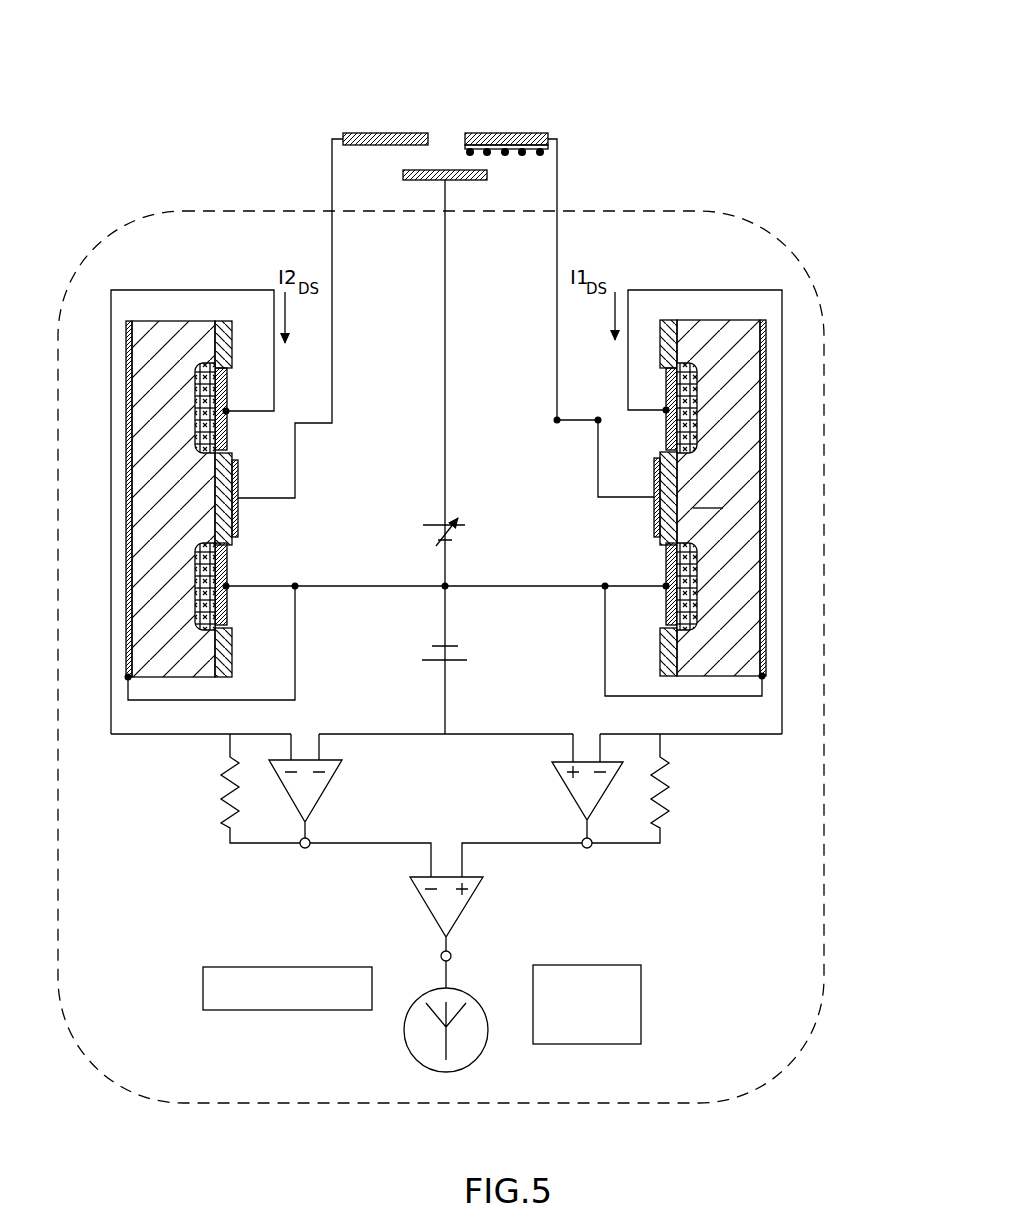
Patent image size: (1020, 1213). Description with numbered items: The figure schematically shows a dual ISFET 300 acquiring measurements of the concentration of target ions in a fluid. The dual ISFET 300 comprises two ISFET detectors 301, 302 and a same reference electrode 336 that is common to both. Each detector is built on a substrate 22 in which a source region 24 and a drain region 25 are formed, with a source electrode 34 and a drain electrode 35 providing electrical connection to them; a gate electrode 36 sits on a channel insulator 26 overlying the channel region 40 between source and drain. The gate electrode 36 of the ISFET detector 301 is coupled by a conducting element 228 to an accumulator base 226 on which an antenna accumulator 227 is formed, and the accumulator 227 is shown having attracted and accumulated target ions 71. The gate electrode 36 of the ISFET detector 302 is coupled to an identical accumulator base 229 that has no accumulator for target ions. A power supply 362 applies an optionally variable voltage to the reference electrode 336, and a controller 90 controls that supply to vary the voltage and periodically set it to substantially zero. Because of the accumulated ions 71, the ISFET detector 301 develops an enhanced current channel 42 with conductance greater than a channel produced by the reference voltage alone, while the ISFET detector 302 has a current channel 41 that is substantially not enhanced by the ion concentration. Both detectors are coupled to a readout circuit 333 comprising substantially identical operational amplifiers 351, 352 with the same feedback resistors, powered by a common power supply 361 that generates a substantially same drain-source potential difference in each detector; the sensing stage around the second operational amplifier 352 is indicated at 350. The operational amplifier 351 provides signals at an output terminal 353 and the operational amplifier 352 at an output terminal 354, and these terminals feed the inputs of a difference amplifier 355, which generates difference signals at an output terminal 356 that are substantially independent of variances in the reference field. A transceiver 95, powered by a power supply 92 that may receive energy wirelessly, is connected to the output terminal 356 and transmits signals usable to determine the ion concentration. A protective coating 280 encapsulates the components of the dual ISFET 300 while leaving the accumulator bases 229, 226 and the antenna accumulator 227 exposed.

The dual ISFET 300 is at (752, 102).
The protective coating 280 is at (697, 211).
The accumulator base 229 is at (370, 133).
The antenna accumulator 227 is at (466, 140).
The accumulator base 226 is at (536, 149).
The target ions 71 is at (507, 156).
The reference electrode 336 is at (430, 180).
The ISFET detector 302 is at (176, 499).
The ISFET detector 301 is at (666, 400).
The substrate 22 is at (198, 508).
The channel region 40 is at (197, 527).
The current channel 41 is at (210, 468).
The enhanced current channel 42 is at (692, 472).
The drain region 25 is at (226, 375).
The drain electrode 35 is at (228, 436).
The gate electrode 36 is at (238, 472).
The channel insulator 26 is at (238, 518).
The source region 24 is at (228, 556).
The source electrode 34 is at (228, 605).
The conducting element 228 is at (332, 405).
The power supply 362 is at (432, 520).
The power supply 361 is at (458, 660).
The second sensing circuit 350 is at (170, 790).
The readout circuit 333 is at (720, 780).
The operational amplifier 352 is at (322, 796).
The operational amplifier 351 is at (572, 797).
The output terminal 354 is at (302, 850).
The output terminal 353 is at (590, 850).
The difference amplifier 355 is at (468, 908).
The output terminal 356 is at (440, 958).
The controller 90 is at (260, 966).
The power supply 92 is at (590, 964).
The transceiver 95 is at (412, 1060).